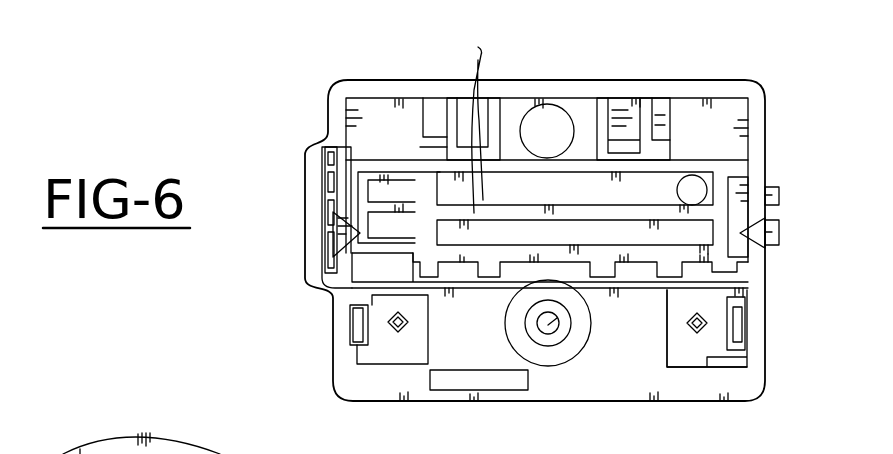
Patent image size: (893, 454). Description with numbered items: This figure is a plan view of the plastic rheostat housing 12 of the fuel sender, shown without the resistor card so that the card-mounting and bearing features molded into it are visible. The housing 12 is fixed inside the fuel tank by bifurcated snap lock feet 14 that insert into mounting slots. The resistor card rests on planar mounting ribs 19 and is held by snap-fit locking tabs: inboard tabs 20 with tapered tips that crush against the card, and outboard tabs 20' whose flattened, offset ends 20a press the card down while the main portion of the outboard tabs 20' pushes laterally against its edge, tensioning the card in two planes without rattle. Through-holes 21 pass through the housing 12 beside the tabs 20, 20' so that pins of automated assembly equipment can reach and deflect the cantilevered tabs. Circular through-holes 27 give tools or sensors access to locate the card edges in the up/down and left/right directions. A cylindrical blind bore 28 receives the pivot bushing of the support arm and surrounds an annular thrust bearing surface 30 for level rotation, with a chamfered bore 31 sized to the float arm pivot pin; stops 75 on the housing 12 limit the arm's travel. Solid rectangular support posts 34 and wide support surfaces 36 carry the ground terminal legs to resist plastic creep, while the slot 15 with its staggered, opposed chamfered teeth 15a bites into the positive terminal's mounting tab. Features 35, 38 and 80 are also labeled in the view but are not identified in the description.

The plastic rheostat housing 12 is at (405, 395).
The bifurcated snap lock feet 14 is at (780, 233).
The slot 15 is at (322, 152).
The chamfered teeth 15a is at (325, 190).
The planar mounting ribs 19 is at (465, 118).
The snap-fit locking tabs 20 is at (563, 153).
The outboard tabs 20' is at (635, 91).
The flattened offset ends 20a is at (633, 153).
The through-holes 21 is at (413, 257).
The circular through-holes 27 is at (538, 125).
The cylindrical blind bore 28 is at (547, 357).
The annular thrust bearing surface 30 is at (567, 352).
The chamfered bore 31 is at (552, 321).
The support posts 34 is at (368, 357).
The slot housing 35 is at (358, 332).
The support surfaces 36 is at (418, 330).
The locking key 38 is at (390, 322).
The stops 75 is at (315, 226).
The cover 80 is at (260, 453).